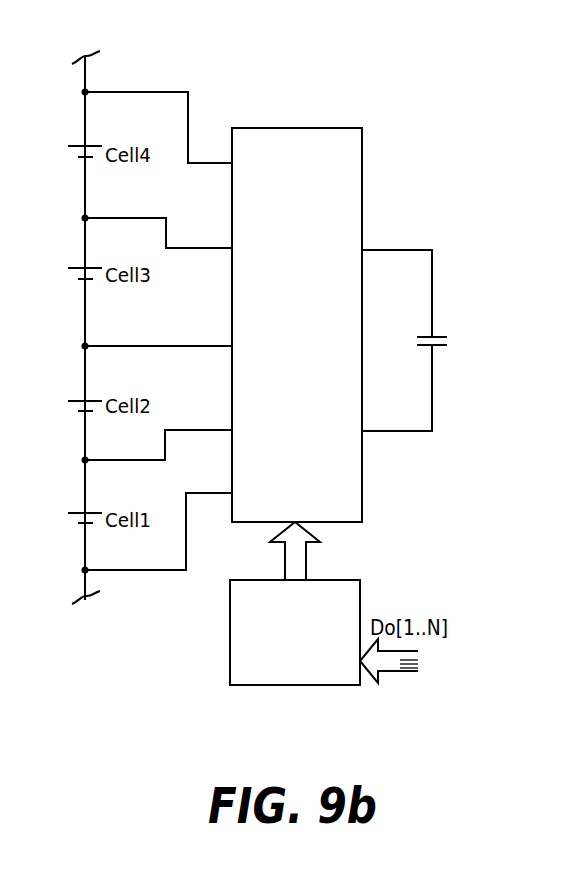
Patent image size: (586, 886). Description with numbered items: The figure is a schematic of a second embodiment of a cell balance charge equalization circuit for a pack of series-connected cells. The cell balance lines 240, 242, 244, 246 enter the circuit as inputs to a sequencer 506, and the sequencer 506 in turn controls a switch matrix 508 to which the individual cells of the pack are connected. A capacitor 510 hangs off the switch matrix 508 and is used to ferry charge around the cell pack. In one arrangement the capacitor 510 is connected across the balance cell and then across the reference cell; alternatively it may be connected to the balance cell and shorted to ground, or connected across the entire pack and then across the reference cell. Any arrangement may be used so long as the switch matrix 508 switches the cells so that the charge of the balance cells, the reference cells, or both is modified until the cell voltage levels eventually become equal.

The switch matrix 508 is at (255, 143).
The capacitor 510 is at (437, 347).
The sequencer 506 is at (242, 668).
The cell balance line 240 is at (413, 657).
The cell balance line 242 is at (413, 660).
The cell balance line 244 is at (413, 662).
The cell balance line 246 is at (413, 664).